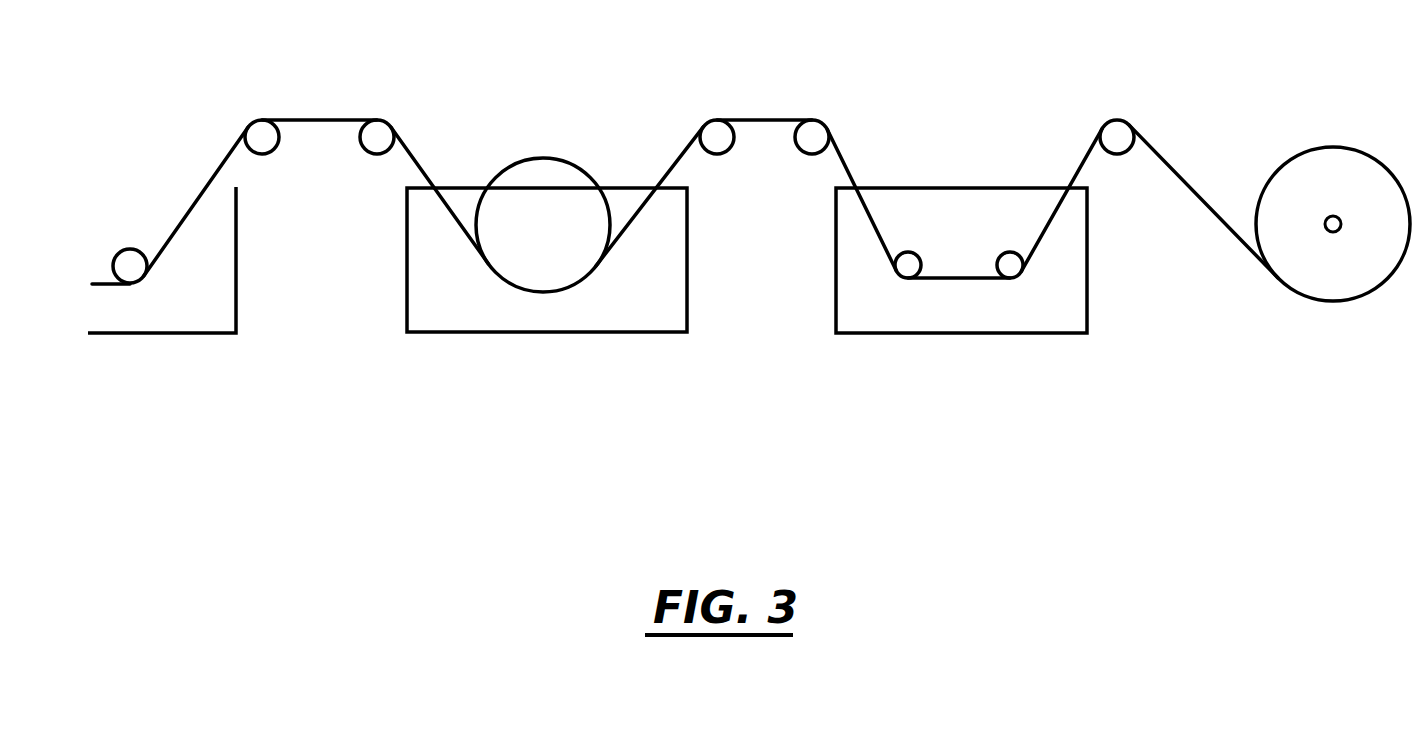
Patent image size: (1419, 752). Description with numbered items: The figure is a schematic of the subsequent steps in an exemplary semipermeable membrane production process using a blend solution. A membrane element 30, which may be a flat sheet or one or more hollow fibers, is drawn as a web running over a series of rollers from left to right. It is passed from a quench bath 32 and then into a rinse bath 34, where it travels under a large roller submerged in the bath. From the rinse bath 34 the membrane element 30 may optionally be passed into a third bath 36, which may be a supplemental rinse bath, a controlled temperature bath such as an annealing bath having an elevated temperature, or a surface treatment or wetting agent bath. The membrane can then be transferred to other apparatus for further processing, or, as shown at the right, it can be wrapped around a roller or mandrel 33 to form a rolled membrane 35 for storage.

The membrane element 30 is at (317, 118).
The quench bath 32 is at (206, 301).
The roller or mandrel 33 is at (1335, 233).
The rinse bath 34 is at (653, 303).
The rolled membrane 35 is at (1322, 162).
The third bath 36 is at (985, 239).